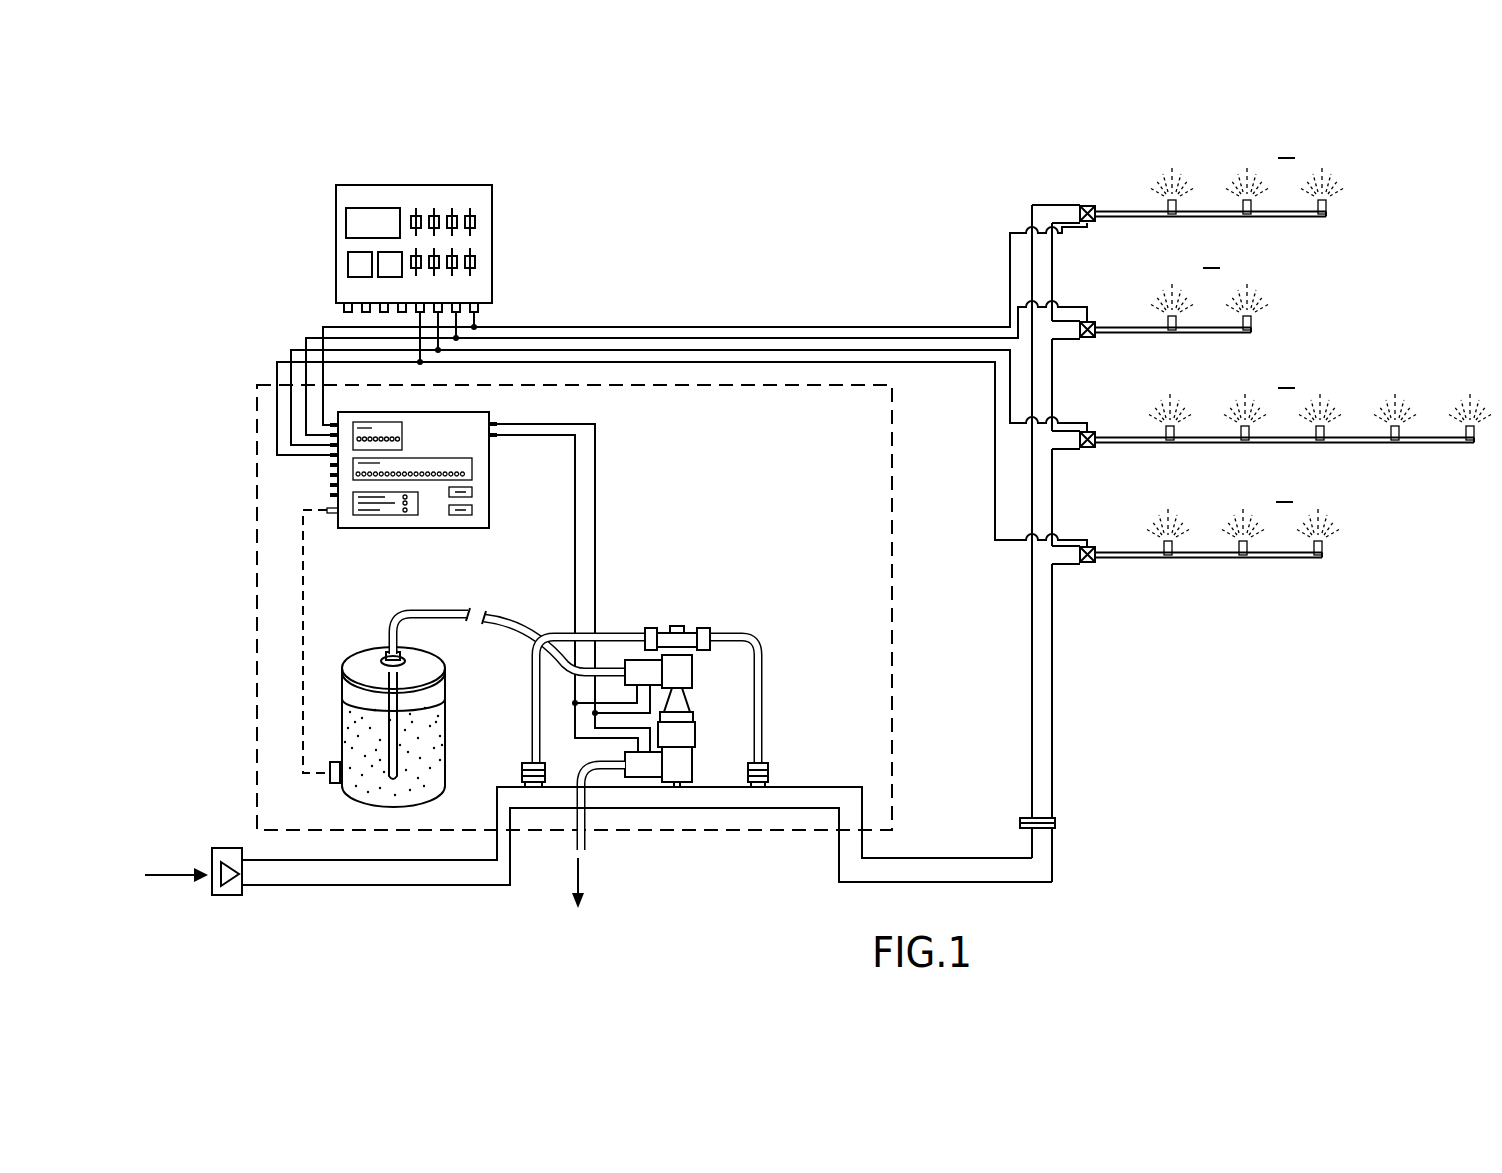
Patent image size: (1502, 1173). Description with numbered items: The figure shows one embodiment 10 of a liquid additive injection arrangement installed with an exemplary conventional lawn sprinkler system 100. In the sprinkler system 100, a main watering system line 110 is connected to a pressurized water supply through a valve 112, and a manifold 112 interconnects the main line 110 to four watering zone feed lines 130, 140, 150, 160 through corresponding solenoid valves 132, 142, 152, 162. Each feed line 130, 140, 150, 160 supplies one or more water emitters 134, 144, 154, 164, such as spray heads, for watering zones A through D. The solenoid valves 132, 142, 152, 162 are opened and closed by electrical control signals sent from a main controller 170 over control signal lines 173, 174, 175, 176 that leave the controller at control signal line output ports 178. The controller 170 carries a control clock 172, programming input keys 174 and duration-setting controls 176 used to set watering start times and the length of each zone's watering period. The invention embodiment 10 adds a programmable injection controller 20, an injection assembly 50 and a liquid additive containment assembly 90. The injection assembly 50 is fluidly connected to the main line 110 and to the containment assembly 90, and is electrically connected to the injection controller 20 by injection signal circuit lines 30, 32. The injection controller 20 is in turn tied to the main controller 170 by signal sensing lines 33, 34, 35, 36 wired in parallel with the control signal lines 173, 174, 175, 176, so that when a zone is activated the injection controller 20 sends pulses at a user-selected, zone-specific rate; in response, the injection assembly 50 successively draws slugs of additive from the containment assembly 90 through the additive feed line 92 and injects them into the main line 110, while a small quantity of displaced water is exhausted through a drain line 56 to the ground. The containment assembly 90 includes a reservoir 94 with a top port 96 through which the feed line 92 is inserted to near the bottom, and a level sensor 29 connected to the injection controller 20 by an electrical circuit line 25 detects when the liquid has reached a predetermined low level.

The invention embodiment 10 is at (724, 484).
The programmable injection controller 20 is at (497, 521).
The electrical circuit line 25 is at (312, 558).
The level sensor 29 is at (334, 784).
The injection signal circuit line 30 is at (595, 534).
The injection signal circuit line 32 is at (575, 570).
The signal sensing line 33 is at (322, 333).
The signal sensing line 34 is at (305, 342).
The signal sensing line 35 is at (290, 352).
The signal sensing line 36 is at (276, 380).
The injection assembly 50 is at (771, 651).
The drain line 56 is at (592, 762).
The liquid additive containment assembly 90 is at (352, 644).
The additive feed line 92 is at (426, 610).
The reservoir 94 is at (446, 732).
The top port 96 is at (406, 660).
The lawn sprinkler system 100 is at (774, 232).
The main watering system line 110 is at (826, 858).
The valve / manifold 112 is at (245, 896).
The watering zone feed line 130 is at (1236, 218).
The solenoid valve 132 is at (1086, 206).
The water emitters 134 is at (1330, 207).
The watering zone feed line 140 is at (1190, 334).
The solenoid valve 142 is at (1086, 321).
The water emitters 144 is at (1250, 325).
The watering zone feed line 150 is at (1385, 445).
The solenoid valve 152 is at (1086, 432).
The water emitters 154 is at (1470, 430).
The watering zone feed line 160 is at (1286, 560).
The solenoid valve 162 is at (1086, 547).
The water emitters 164 is at (1243, 559).
The main controller 170 is at (502, 188).
The control clock 172 is at (360, 206).
The control signal line 173 is at (799, 326).
The programming input keys / control signal line 174 is at (383, 252).
The control signal line 175 is at (866, 349).
The duration-setting controls / control signal line 176 is at (478, 224).
The control signal line output ports 178 is at (402, 300).